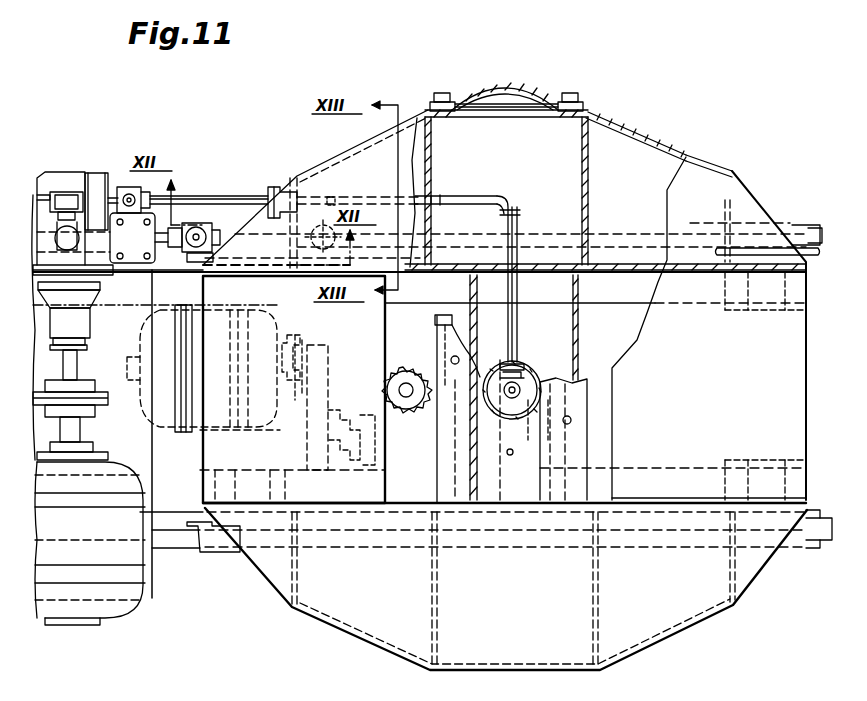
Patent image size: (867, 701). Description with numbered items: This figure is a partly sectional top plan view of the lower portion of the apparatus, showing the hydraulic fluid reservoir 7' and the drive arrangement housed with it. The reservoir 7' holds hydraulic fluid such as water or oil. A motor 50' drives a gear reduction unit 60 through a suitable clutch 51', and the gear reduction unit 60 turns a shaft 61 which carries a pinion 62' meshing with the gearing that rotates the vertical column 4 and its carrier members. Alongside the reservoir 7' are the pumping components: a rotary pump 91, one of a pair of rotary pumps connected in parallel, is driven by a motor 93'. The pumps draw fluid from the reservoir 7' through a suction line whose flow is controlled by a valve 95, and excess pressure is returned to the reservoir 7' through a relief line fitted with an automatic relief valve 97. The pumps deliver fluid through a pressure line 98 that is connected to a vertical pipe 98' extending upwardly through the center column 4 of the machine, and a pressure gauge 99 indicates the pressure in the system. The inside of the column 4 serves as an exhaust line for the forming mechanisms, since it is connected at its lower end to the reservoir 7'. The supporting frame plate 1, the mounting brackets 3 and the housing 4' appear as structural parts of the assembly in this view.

The frame plate 1 is at (168, 495).
The bracket 3 is at (800, 228).
The column 4 is at (479, 380).
The housing 4' is at (488, 387).
The reservoir 7' is at (420, 388).
The motor 50' is at (256, 404).
The clutch 51' is at (328, 389).
The gear reduction unit 60 is at (396, 332).
The shaft 61 is at (408, 395).
The gear 62' is at (407, 377).
The rotary pump 91 is at (48, 183).
The motor 93' is at (90, 524).
The valve 95 is at (192, 228).
The automatic relief valve 97 is at (130, 190).
The pressure line 98 is at (395, 258).
The vertical pipe 98' is at (520, 379).
The pressure gauge 99 is at (97, 178).